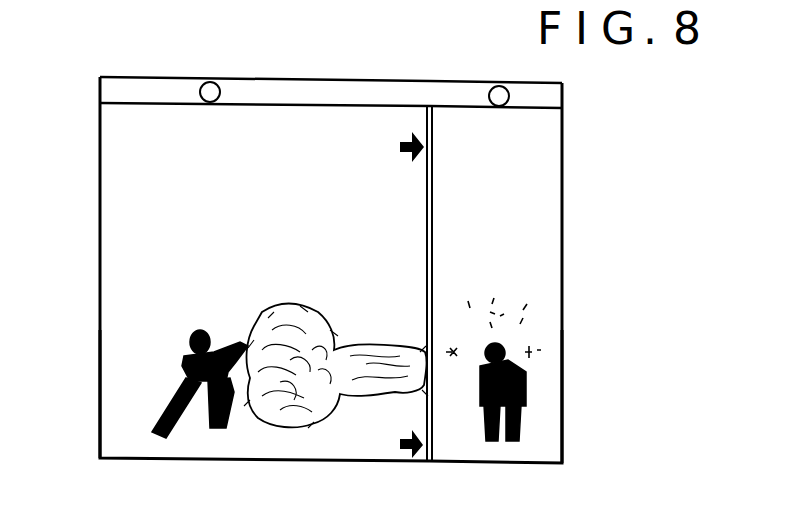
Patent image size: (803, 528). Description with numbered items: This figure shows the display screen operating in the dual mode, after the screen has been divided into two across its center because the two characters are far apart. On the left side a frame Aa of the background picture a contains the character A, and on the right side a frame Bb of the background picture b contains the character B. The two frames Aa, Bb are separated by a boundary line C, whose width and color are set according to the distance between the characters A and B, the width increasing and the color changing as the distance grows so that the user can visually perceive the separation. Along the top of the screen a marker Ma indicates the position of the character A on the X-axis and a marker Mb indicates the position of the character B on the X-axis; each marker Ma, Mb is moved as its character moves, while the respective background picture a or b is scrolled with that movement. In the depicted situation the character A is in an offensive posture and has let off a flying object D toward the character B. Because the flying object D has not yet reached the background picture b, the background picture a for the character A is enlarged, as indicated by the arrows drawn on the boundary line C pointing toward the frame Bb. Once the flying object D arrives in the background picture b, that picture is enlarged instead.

The background picture a is at (156, 239).
The background picture b is at (508, 238).
The boundary line C is at (433, 187).
The marker Ma is at (206, 90).
The marker Mb is at (498, 94).
The character A is at (178, 384).
The frame Aa is at (98, 378).
The flying object D is at (336, 346).
The character B is at (481, 405).
The frame Bb is at (562, 410).